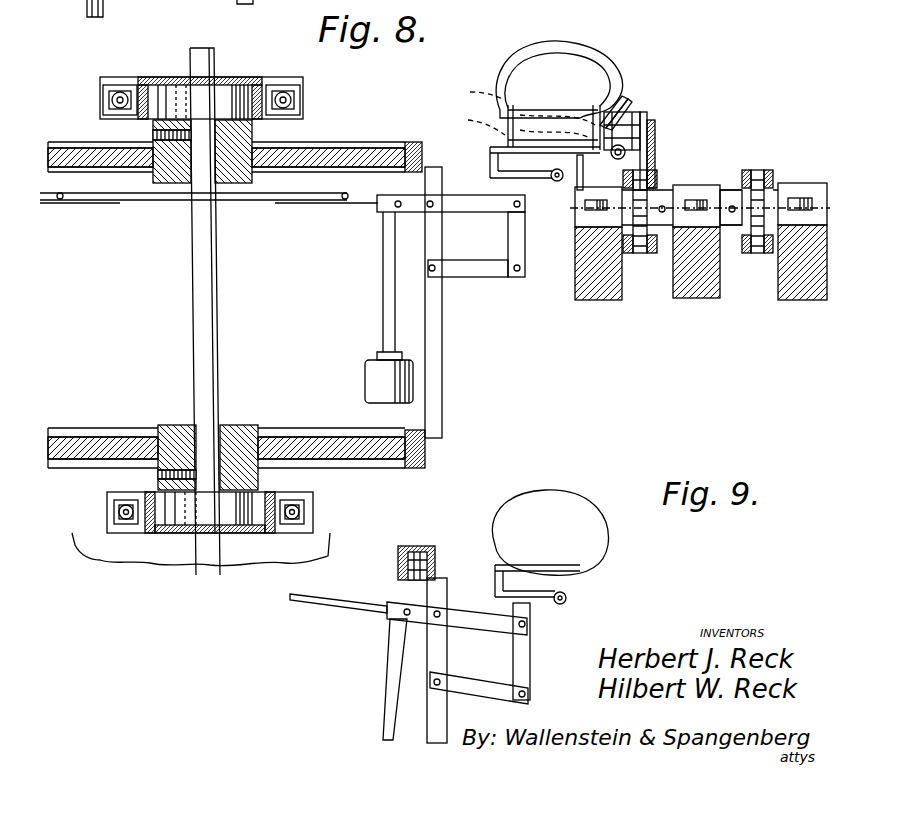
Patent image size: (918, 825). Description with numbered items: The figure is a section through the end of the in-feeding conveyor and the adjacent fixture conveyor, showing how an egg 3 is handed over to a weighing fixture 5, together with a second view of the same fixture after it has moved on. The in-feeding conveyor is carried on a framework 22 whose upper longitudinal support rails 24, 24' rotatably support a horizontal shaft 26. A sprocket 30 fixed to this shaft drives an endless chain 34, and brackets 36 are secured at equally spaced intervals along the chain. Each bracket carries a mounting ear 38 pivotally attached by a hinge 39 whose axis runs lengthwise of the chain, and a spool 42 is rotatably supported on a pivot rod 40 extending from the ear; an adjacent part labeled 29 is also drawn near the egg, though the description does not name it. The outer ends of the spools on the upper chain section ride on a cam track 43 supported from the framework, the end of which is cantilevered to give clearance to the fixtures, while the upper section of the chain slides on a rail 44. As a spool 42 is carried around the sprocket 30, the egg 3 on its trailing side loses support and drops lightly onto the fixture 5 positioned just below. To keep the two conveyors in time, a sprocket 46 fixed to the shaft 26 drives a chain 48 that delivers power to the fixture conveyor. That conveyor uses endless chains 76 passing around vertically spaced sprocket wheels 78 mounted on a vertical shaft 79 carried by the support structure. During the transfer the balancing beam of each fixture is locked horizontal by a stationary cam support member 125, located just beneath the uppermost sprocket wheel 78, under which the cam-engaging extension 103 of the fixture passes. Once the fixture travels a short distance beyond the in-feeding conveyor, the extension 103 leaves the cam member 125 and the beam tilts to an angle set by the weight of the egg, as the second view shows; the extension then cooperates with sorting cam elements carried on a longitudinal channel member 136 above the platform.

In FIG. 8, the egg 3 is at (537, 50).
In FIG. 9, the egg 3 is at (586, 508).
In FIG. 8, the weighing fixture 5 is at (452, 284).
In FIG. 9, the weighing fixture 5 is at (546, 637).
In FIG. 8, the framework 22 is at (661, 248).
In FIG. 8, the upper longitudinal support rail 24 is at (733, 282).
In FIG. 8, the upper longitudinal support rail 24' is at (598, 268).
In FIG. 8, the horizontal shaft 26 is at (791, 200).
In FIG. 8, the fruit cup 29 is at (573, 76).
In FIG. 8, the sprocket 30 is at (645, 255).
In FIG. 8, the endless chain 34 is at (655, 186).
In FIG. 8, the bracket 36 is at (580, 186).
In FIG. 8, the mounting ear 38 is at (625, 125).
In FIG. 8, the hinge 39 is at (636, 126).
In FIG. 8, the pivot rod 40 is at (617, 125).
In FIG. 8, the spool 42 is at (471, 93).
In FIG. 8, the cam track 43 is at (470, 120).
In FIG. 8, the rail 44 is at (667, 187).
In FIG. 8, the sprocket 46 is at (730, 226).
In FIG. 8, the chain 48 is at (758, 256).
In FIG. 8, the endless chain 76 is at (428, 142).
In FIG. 8, the sprocket wheel 78 is at (90, 150).
In FIG. 8, the shaft 79 is at (192, 300).
In FIG. 9, the cam-engaging extension 103 is at (325, 604).
In FIG. 8, the stationary cam support member 125 is at (170, 204).
In FIG. 8, the longitudinal channel member 136 is at (243, 78).